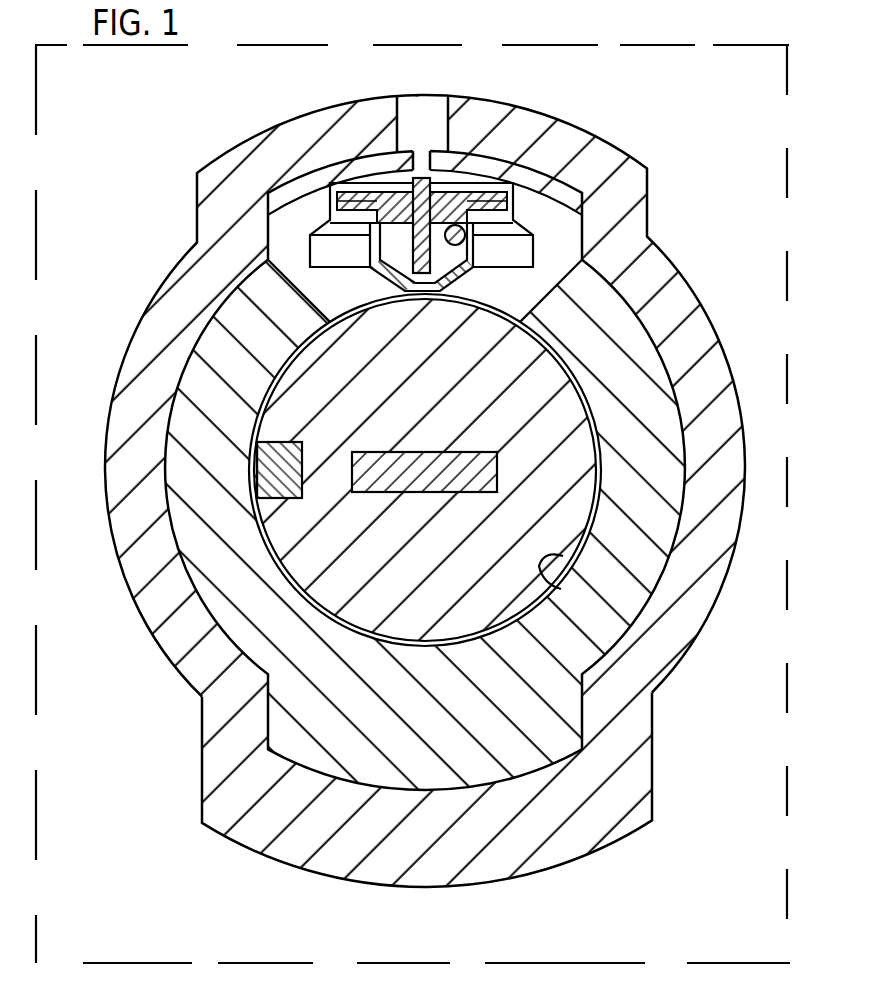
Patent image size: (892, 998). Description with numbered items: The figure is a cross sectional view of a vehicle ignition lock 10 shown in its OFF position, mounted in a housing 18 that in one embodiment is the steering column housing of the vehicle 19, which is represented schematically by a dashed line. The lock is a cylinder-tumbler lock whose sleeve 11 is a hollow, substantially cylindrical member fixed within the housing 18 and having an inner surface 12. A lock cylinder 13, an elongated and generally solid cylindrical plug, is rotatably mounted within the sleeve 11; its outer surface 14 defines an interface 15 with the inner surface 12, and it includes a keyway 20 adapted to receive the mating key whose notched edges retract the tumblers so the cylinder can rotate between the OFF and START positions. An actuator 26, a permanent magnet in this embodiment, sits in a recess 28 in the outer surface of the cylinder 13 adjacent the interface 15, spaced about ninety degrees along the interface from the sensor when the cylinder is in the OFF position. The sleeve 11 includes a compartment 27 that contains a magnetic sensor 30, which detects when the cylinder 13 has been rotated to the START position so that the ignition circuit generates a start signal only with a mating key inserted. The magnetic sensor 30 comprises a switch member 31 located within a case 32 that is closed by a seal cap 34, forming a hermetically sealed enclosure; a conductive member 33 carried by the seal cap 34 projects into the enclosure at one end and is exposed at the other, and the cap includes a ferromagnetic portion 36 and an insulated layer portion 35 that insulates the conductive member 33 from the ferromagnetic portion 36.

The ignition lock 10 is at (665, 352).
The sleeve 11 is at (638, 606).
The inner surface 12 is at (560, 554).
The lock cylinder 13 is at (528, 492).
The outer surface 14 is at (263, 544).
The interface 15 is at (247, 398).
The housing 18 is at (343, 855).
The vehicle 19 is at (570, 958).
The keyway 20 is at (427, 466).
The actuator 26 is at (285, 468).
The compartment 27 is at (370, 180).
The recess 28 is at (292, 498).
The magnetic sensor 30 is at (345, 228).
The switch member 31 is at (462, 238).
The case 32 is at (370, 278).
The conductive member 33 is at (410, 250).
The seal cap 34 is at (467, 183).
The insulated layer portion 35 is at (440, 190).
The ferromagnetic portion 36 is at (556, 140).